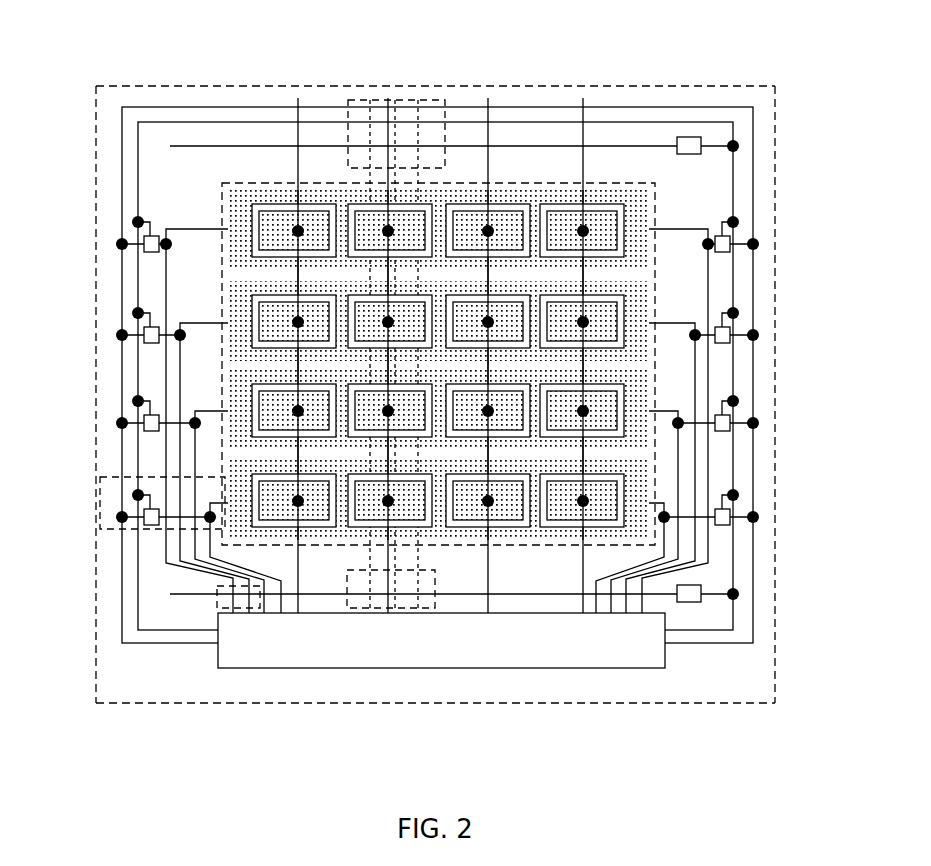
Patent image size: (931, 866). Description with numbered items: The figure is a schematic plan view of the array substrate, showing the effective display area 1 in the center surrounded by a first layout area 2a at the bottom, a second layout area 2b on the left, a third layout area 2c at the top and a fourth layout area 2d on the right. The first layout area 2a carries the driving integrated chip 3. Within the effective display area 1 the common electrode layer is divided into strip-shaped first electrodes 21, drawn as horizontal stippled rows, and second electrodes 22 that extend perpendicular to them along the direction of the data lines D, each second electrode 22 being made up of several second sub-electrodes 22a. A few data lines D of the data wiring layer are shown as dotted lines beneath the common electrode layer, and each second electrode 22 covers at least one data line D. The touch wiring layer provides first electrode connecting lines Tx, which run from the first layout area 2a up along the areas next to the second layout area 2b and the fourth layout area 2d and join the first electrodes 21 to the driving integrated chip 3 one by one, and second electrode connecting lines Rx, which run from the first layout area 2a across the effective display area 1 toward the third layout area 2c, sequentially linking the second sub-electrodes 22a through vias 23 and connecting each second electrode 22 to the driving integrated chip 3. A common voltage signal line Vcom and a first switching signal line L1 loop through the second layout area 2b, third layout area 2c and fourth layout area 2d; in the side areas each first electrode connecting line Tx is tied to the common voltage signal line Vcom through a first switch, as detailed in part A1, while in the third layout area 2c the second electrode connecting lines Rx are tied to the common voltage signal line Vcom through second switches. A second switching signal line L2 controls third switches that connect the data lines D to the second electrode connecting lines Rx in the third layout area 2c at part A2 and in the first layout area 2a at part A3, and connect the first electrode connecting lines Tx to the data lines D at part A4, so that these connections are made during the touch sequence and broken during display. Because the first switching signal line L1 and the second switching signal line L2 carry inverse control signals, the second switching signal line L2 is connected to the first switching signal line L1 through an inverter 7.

The effective display area 1 is at (653, 292).
The first electrode 21 is at (640, 217).
The second electrode 22 is at (597, 212).
The second sub-electrode 22a is at (603, 424).
The via 23 is at (600, 407).
The driving integrated chip 3 is at (588, 632).
The inverter 7 is at (688, 600).
The first layout area 2a is at (550, 703).
The second layout area 2b is at (100, 290).
The third layout area 2c is at (265, 95).
The fourth layout area 2d is at (768, 493).
The part A1 is at (108, 478).
The part A2 is at (355, 100).
The part A3 is at (348, 612).
The part A4 is at (213, 607).
The data line D is at (418, 147).
The second electrode connecting line Rx is at (488, 165).
The first electrode connecting line Tx is at (167, 563).
The first switching signal line L1 is at (138, 168).
The second switching signal line L2 is at (508, 594).
The common voltage signal line Vcom is at (165, 106).